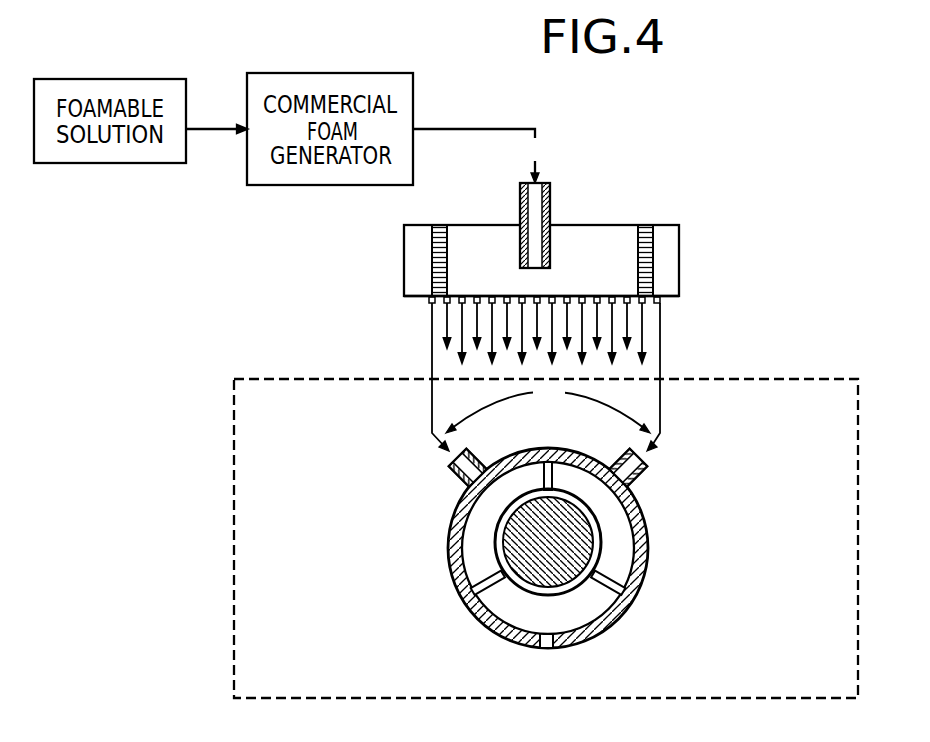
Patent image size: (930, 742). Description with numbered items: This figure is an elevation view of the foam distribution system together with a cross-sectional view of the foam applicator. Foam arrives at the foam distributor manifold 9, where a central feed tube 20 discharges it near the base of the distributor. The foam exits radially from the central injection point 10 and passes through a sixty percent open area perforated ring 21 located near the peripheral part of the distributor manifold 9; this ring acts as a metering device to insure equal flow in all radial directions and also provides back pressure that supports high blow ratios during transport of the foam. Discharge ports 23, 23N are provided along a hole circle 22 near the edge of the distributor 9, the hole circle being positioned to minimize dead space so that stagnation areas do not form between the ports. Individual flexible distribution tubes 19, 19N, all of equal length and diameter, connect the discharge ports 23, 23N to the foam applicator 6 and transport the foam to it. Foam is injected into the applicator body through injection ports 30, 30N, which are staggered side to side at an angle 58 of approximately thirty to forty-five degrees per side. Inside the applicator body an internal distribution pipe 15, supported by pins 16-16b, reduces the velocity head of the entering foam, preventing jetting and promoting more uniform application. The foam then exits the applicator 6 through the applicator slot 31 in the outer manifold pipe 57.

The foam applicator 6 is at (316, 398).
The foam distributor manifold 9 is at (680, 262).
The central injection point 10 is at (538, 160).
The internal distribution pipe 15 is at (548, 553).
The pins 16-16b is at (608, 568).
The distribution tube 19 is at (432, 399).
The distribution tube 19N is at (661, 400).
The central feed tube 20 is at (551, 210).
The perforated ring 21 is at (652, 248).
The hole circle 22 is at (661, 298).
The discharge port 23 is at (432, 301).
The discharge port 23N is at (660, 301).
The injection port 30 is at (462, 483).
The injection port 30N is at (635, 480).
The applicator slot 31 is at (547, 650).
The outer manifold pipe 57 is at (472, 612).
The angle 58 is at (548, 408).